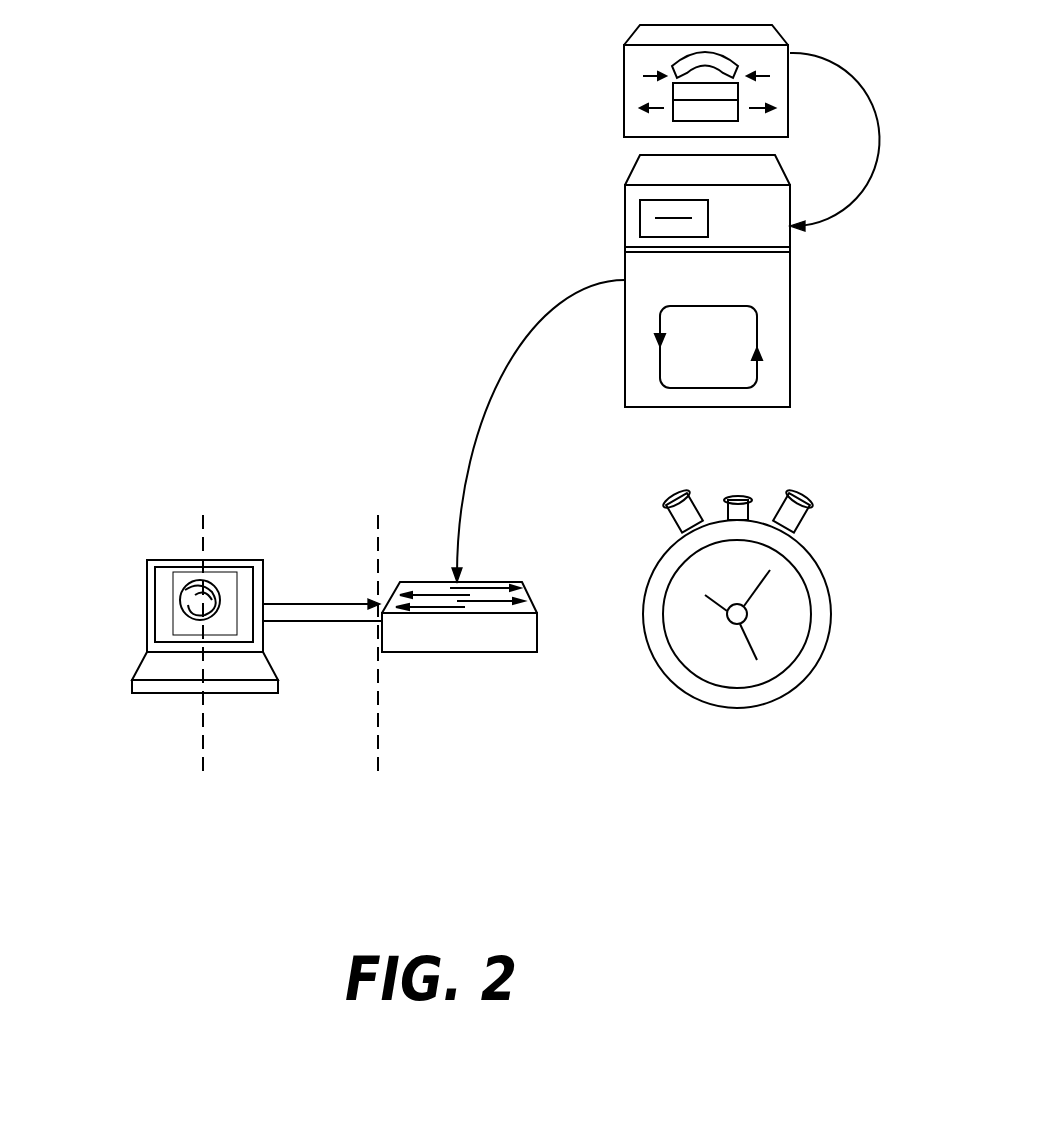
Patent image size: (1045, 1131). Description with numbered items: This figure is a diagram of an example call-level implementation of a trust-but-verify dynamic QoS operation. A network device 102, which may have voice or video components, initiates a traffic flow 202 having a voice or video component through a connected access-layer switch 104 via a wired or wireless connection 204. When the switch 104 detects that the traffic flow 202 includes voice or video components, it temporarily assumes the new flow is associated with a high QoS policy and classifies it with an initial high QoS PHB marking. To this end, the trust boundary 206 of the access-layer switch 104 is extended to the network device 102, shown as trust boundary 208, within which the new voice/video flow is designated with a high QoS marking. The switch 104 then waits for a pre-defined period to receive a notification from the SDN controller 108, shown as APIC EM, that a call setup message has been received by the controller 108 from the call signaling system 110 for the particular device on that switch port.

The network device 102 is at (147, 580).
The access-layer switch 104 is at (490, 582).
The SDN controller 108 is at (790, 268).
The call signaling system 110 is at (790, 52).
The traffic flow 202 is at (335, 603).
The wired or wireless connection 204 is at (365, 621).
The trust boundary 206 is at (378, 527).
The trust boundary 208 is at (203, 525).